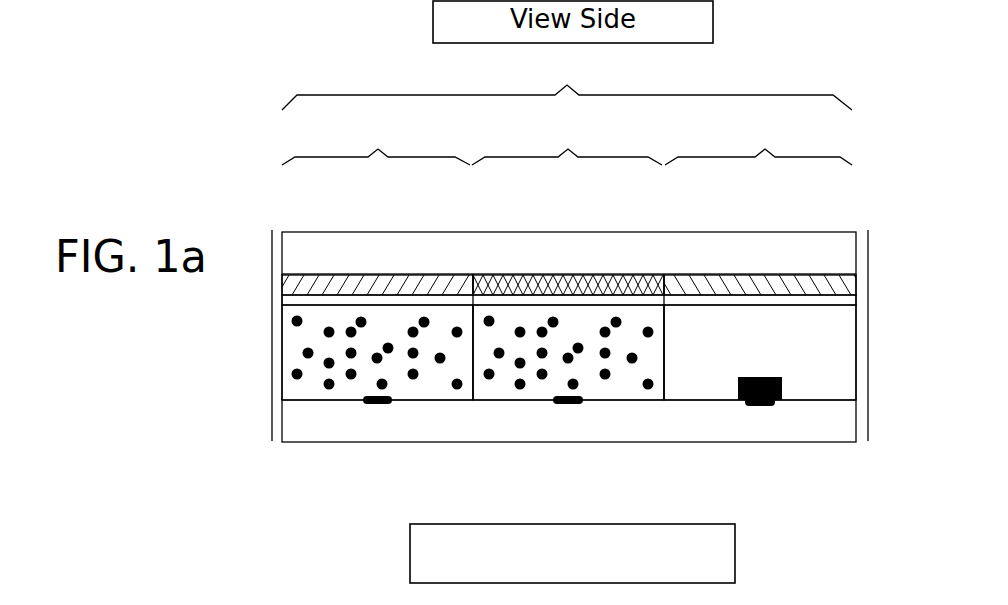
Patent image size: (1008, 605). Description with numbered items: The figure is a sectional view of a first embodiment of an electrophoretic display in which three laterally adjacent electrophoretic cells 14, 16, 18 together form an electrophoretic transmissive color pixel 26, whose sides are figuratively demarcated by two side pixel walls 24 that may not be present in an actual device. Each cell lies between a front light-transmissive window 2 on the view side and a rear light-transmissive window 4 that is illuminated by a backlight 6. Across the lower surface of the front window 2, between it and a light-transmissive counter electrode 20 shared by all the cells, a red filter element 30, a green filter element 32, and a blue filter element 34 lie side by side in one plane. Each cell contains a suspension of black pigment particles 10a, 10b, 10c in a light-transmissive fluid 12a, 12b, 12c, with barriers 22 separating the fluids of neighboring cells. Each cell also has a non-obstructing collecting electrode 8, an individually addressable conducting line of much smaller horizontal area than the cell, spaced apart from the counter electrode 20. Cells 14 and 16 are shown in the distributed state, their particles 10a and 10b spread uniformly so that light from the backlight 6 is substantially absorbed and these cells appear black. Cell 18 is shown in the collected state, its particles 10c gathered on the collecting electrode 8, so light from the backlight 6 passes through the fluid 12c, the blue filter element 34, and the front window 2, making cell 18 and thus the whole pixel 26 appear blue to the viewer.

The front light-transmissive window 2 is at (835, 255).
The rear light-transmissive window 4 is at (795, 423).
The backlight 6 is at (728, 553).
The collecting electrode 8 is at (377, 405).
The pigment particles 10a is at (329, 390).
The pigment particles 10b is at (520, 390).
The pigment particles 10c is at (737, 400).
The light-transmissive fluid 12a is at (322, 318).
The light-transmissive fluid 12b is at (507, 318).
The light-transmissive fluid 12c is at (692, 320).
The electrophoretic cell 14 is at (377, 260).
The electrophoretic cell 16 is at (568, 260).
The electrophoretic cell 18 is at (760, 260).
The counter electrode 20 is at (420, 302).
The barrier 22 is at (282, 375).
The side pixel wall 24 is at (272, 352).
The electrophoretic transmissive color pixel 26 is at (567, 85).
The red filter element 30 is at (356, 282).
The green filter element 32 is at (548, 284).
The blue filter element 34 is at (740, 284).